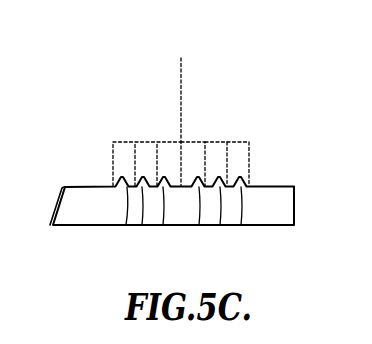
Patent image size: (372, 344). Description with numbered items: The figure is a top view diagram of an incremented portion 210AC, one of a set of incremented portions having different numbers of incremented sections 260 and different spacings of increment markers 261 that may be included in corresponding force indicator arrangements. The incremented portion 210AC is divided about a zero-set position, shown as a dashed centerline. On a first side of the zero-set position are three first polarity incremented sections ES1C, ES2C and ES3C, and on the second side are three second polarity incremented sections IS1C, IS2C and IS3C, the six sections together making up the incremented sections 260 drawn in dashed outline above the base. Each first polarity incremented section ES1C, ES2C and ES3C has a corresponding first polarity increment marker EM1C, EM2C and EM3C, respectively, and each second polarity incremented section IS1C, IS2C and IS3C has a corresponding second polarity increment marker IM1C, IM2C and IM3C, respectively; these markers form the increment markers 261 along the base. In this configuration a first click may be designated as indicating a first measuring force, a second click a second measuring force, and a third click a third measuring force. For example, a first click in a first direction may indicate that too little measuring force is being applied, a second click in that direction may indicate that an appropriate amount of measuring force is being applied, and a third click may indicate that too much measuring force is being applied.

The incremented portion 210AC is at (233, 70).
The zero-set position zero-set is at (176, 75).
The incremented sections 260 is at (191, 134).
The increment markers 261 is at (196, 228).
The first polarity incremented section ES1C is at (168, 141).
The first polarity incremented section ES2C is at (144, 141).
The first polarity incremented section ES3C is at (123, 141).
The second polarity incremented section IS1C is at (193, 141).
The second polarity incremented section IS2C is at (215, 141).
The second polarity incremented section IS3C is at (264, 146).
The first polarity increment marker EM1C is at (163, 225).
The first polarity increment marker EM2C is at (142, 225).
The first polarity increment marker EM3C is at (126, 225).
The second polarity increment marker IM1C is at (199, 225).
The second polarity increment marker IM2C is at (220, 225).
The second polarity increment marker IM3C is at (241, 225).